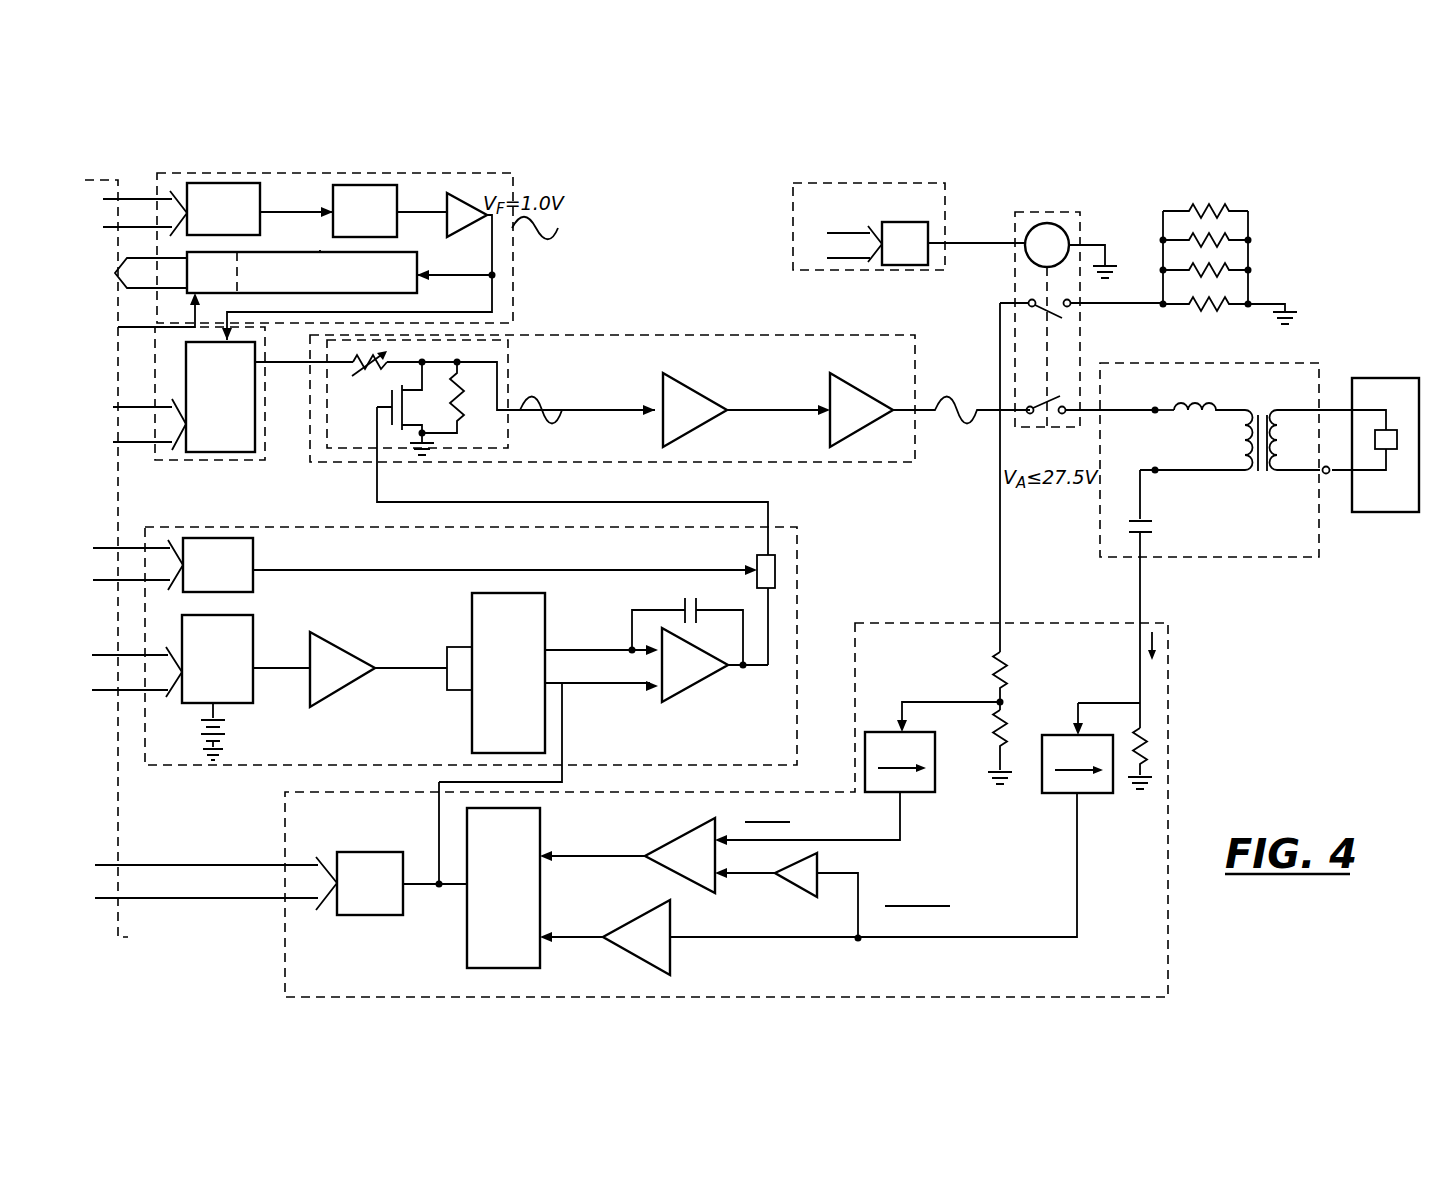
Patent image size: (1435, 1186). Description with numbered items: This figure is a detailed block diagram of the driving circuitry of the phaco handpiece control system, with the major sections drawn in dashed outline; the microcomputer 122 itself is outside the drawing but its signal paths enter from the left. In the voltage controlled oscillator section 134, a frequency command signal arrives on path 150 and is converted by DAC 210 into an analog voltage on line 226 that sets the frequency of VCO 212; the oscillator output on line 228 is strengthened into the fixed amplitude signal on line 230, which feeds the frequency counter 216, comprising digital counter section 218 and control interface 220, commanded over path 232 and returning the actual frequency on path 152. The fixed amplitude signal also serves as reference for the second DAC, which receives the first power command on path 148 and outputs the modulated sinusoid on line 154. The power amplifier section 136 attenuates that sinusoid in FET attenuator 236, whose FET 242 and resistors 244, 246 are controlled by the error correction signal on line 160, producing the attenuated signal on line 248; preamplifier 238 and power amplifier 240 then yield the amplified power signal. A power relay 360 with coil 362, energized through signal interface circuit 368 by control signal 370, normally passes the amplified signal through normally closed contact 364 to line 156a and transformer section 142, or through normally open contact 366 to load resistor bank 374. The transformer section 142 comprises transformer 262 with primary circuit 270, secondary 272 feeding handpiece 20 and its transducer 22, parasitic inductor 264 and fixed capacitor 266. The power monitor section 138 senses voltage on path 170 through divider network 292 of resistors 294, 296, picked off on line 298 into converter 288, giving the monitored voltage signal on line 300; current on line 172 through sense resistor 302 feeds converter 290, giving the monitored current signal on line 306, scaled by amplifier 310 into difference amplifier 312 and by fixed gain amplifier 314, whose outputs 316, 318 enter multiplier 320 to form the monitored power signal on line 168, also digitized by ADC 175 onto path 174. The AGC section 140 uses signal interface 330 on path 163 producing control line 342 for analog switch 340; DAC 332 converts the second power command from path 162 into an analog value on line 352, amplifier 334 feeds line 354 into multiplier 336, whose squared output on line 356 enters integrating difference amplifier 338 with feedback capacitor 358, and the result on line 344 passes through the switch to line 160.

The microcomputer 122 is at (115, 174).
The voltage controlled oscillator section 134 is at (513, 173).
The frequency command signal path 150 is at (141, 192).
The digital-to-analog converter 210 is at (205, 183).
The voltage controlled oscillator 212 is at (345, 185).
The analog voltage line 226 is at (289, 210).
The sinusoidal signal line 228 is at (425, 201).
The fixed amplitude voltage signal line 230 is at (497, 270).
The digital counter section 218 is at (405, 285).
The frequency counter 216 is at (320, 252).
The actual frequency signal path 152 is at (165, 285).
The control interface 220 is at (159, 310).
The control signal path 232 is at (142, 327).
The first power command signal path 148 is at (133, 405).
The unamplified sinusoidal signal line 154 is at (292, 364).
The resistor 244 is at (388, 356).
The FET 242 is at (390, 398).
The resistor 246 is at (462, 418).
The FET attenuator 236 is at (512, 375).
The error correction signal line 160 is at (373, 490).
The power amplifier section 136 is at (837, 336).
The attenuated signal line 248 is at (582, 415).
The preamplifier 238 is at (700, 430).
The power amplifier 240 is at (873, 433).
The control signal 370 is at (847, 233).
The signal interface circuit 368 is at (922, 222).
The power relay 360 is at (1040, 212).
The relay coil 362 is at (1072, 228).
The normally open contact 366 is at (1003, 310).
The normally closed contact 364 is at (1032, 405).
The load resistor bank 374 is at (1268, 270).
The voltage sense signal path 170 is at (998, 595).
The transformer section 142 is at (1148, 363).
The transformer input line 156a is at (1138, 431).
The inductor 264 is at (1172, 405).
The primary circuit 270 is at (1238, 484).
The power step up transformer 262 is at (1264, 412).
The secondary 272 is at (1300, 482).
The fixed capacitor 266 is at (1147, 518).
The phaco handpiece 20 is at (1381, 378).
The ultrasonic transducer 22 is at (1397, 428).
The current sense line 172 is at (1143, 596).
The power monitor section 138 is at (1115, 624).
The voltage divider network 292 is at (1004, 705).
The resistor 294 is at (995, 668).
The resistor 296 is at (992, 742).
The divided voltage line 298 is at (905, 722).
The first AC RMS-to-DC voltage converter 288 is at (920, 793).
The second AC RMS-to-DC voltage converter 290 is at (1092, 793).
The sense resistor 302 is at (1152, 722).
The automatic gain control section 140 is at (800, 548).
The control signal path 163 is at (152, 580).
The signal interface 330 is at (253, 540).
The digital control signal line 342 is at (520, 568).
The analog switch 340 is at (760, 556).
The DAC 332 is at (253, 630).
The second power command signal path 162 is at (130, 655).
The analog command line 352 is at (279, 670).
The voltage amplifier 334 is at (345, 634).
The scaled signal line 354 is at (397, 670).
The multiplier 336 is at (522, 753).
The squared signal line 356 is at (550, 647).
The feedback capacitor 358 is at (685, 600).
The integrating difference amplifier 338 is at (712, 664).
The amplifier output line 344 is at (770, 628).
The monitored power signal line 168 is at (439, 790).
The digital power signal path 174 is at (216, 896).
The analog-to-digital converter 175 is at (393, 852).
The multiplier 320 is at (522, 838).
The first multiplier input 316 is at (620, 856).
The difference amplifier 312 is at (677, 843).
The VMV output line 300 is at (900, 830).
The amplifier 310 is at (792, 888).
The VMI output line 306 is at (1077, 862).
The second multiplier input 318 is at (593, 937).
The fixed gain amplifier 314 is at (650, 904).